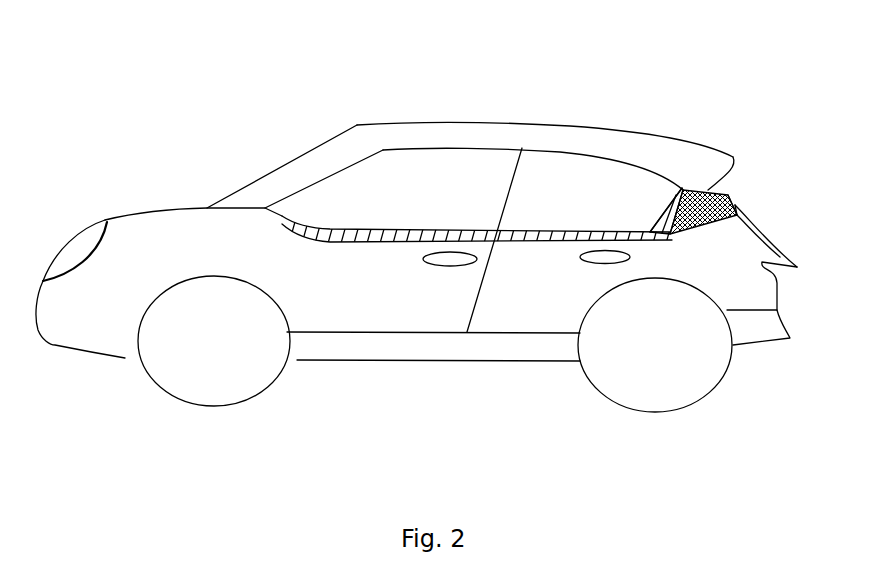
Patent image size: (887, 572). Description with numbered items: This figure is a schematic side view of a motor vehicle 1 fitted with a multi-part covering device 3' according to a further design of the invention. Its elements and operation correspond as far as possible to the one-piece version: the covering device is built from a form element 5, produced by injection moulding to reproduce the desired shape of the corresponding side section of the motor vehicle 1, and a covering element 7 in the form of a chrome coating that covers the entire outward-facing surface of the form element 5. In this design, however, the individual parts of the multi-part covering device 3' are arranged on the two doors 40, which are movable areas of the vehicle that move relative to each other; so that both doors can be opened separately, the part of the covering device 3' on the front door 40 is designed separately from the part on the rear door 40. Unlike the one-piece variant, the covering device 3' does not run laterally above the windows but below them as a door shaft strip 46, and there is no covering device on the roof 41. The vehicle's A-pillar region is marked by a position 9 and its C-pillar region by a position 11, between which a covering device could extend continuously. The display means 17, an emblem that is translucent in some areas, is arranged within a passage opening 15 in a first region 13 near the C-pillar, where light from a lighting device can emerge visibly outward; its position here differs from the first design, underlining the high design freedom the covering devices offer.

The motor vehicle 1 is at (184, 122).
The position in the area of the A-pillar 9 is at (289, 176).
The roof 41 is at (523, 108).
The multi-part covering device 3' is at (477, 156).
The door shaft strip 46 is at (543, 212).
The form element 5 is at (661, 226).
The covering element 7 is at (666, 210).
The display means 17 is at (707, 193).
The passage opening 15 is at (728, 198).
The first region 13 is at (733, 208).
The position in the area of the C-pillar 11 is at (737, 227).
The door 40 is at (534, 312).